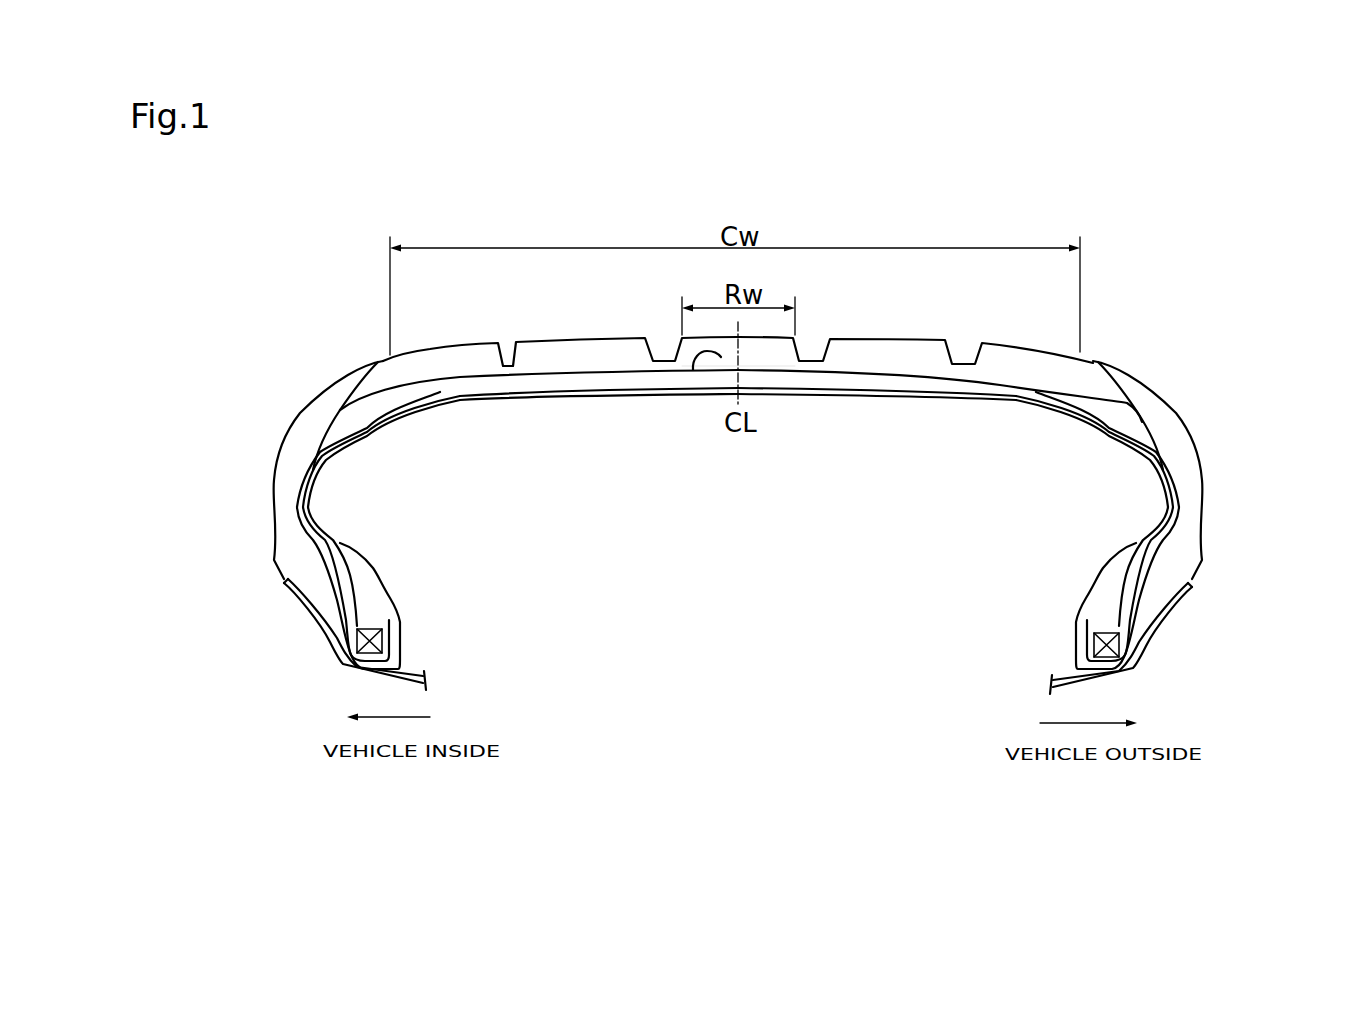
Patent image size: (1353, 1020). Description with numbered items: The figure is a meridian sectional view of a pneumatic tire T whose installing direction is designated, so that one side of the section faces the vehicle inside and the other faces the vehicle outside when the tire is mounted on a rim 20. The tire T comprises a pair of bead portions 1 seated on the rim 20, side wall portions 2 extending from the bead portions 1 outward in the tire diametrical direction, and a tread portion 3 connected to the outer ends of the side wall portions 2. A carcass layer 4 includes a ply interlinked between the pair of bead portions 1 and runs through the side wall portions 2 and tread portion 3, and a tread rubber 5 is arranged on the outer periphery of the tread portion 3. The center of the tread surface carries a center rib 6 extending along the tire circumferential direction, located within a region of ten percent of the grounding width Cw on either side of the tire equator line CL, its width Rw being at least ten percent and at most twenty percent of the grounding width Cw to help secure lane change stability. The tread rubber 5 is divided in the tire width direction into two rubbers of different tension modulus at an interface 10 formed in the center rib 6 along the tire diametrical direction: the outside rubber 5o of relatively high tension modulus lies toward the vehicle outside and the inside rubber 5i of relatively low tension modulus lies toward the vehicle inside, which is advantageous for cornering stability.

The pneumatic tire T is at (313, 278).
The bead portion 1 is at (410, 650).
The side wall portion 2 is at (258, 509).
The tread portion 3 is at (548, 328).
The carcass layer 4 is at (983, 398).
The tread rubber 5 is at (788, 487).
The inside rubber 5i is at (628, 365).
The outside rubber 5o is at (848, 365).
The center rib 6 is at (715, 368).
The interface 10 is at (693, 370).
The rim 20 is at (333, 650).